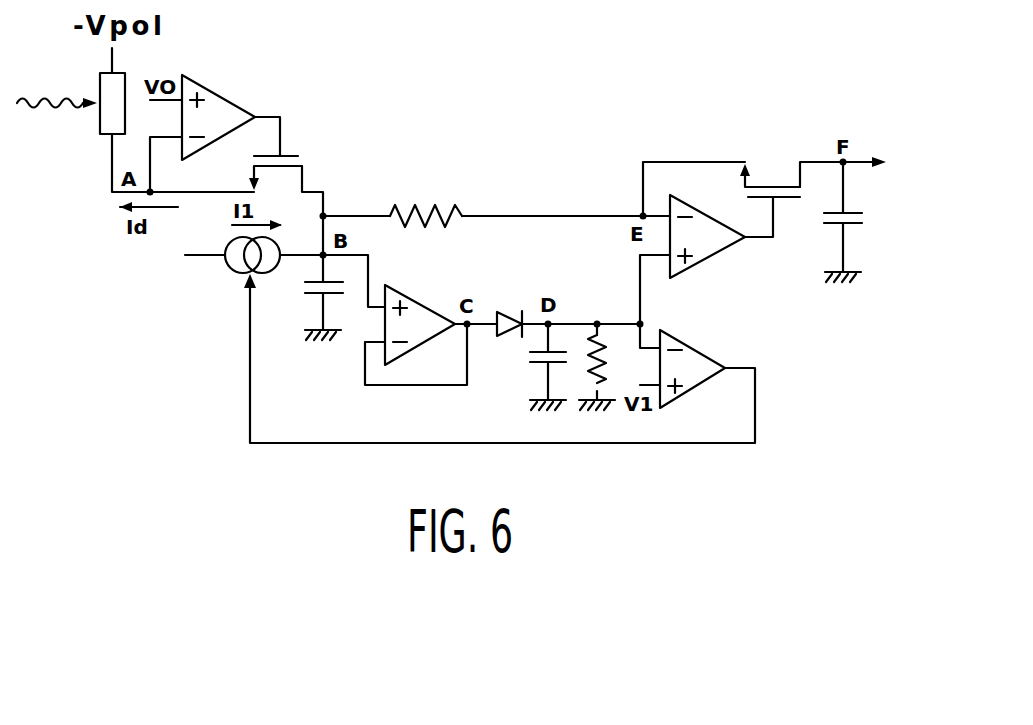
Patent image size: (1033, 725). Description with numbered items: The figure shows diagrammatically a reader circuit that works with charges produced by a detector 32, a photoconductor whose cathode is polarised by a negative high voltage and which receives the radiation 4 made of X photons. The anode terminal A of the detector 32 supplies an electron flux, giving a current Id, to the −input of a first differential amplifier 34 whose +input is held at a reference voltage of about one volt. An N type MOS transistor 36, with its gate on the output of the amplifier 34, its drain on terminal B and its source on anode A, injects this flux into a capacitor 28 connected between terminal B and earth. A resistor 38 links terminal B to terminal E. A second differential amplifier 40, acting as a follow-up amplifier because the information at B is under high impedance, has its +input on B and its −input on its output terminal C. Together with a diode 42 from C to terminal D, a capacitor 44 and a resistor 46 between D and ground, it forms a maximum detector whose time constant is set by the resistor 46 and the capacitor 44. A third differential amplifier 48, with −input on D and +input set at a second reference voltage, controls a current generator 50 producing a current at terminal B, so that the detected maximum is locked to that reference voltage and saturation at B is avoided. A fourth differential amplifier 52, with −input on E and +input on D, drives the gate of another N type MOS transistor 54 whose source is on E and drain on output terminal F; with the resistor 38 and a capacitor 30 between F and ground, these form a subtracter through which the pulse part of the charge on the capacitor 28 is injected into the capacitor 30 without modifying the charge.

The radiation 4 is at (50, 98).
The detector 32 is at (105, 118).
The first differential amplifier 34 is at (238, 99).
The N type MOS transistor 36 is at (312, 163).
The resistor 38 is at (418, 204).
The second differential amplifier 40 is at (417, 291).
The diode 42 is at (512, 316).
The capacitor 44 is at (526, 360).
The resistor 46 is at (594, 362).
The third differential amplifier 48 is at (708, 376).
The current generator 50 is at (236, 269).
The fourth differential amplifier 52 is at (712, 257).
The N type MOS transistor 54 is at (775, 184).
The capacitor 28 is at (304, 290).
The capacitor 30 is at (825, 219).